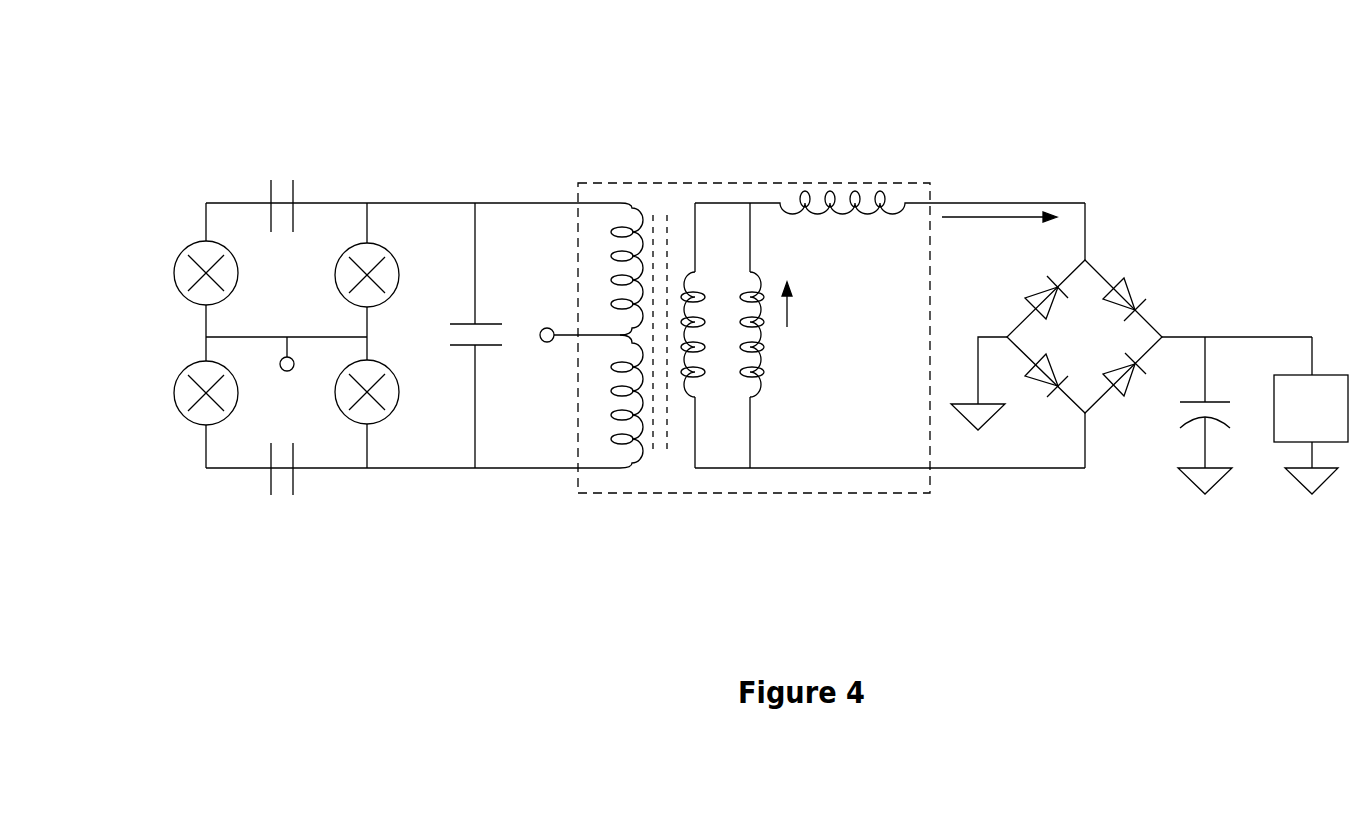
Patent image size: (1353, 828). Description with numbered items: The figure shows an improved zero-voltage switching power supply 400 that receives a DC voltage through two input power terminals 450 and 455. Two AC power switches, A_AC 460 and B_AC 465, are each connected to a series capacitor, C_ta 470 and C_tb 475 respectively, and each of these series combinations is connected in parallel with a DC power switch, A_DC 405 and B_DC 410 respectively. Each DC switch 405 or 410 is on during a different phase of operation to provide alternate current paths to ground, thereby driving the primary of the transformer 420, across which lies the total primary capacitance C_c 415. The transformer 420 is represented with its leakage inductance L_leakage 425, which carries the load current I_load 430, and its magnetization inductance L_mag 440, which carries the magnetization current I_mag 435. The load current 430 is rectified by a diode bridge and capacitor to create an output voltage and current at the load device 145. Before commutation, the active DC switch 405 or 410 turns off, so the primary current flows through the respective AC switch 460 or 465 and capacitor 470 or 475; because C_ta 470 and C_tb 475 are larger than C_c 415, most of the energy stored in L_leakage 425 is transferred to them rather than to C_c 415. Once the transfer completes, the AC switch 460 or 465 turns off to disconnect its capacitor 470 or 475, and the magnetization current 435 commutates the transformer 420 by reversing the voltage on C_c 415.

The zero-voltage switching power supply 400 is at (747, 43).
The DC power switch A_DC 405 is at (407, 297).
The DC power switch B_DC 410 is at (415, 418).
The capacitance C_c 415 is at (512, 390).
The transformer 420 is at (692, 178).
The leakage inductance L_leakage 425 is at (872, 197).
The load current I_load 430 is at (1011, 213).
The magnetization current I_mag 435 is at (837, 326).
The magnetization inductance L_mag 440 is at (823, 432).
The input power terminal 450 is at (538, 292).
The input power terminal 455 is at (290, 375).
The AC power switch A_AC 460 is at (138, 222).
The AC power switch B_AC 465 is at (133, 343).
The series capacitor C_ta 470 is at (279, 175).
The series capacitor C_tb 475 is at (333, 510).
The load device 145 is at (1332, 422).